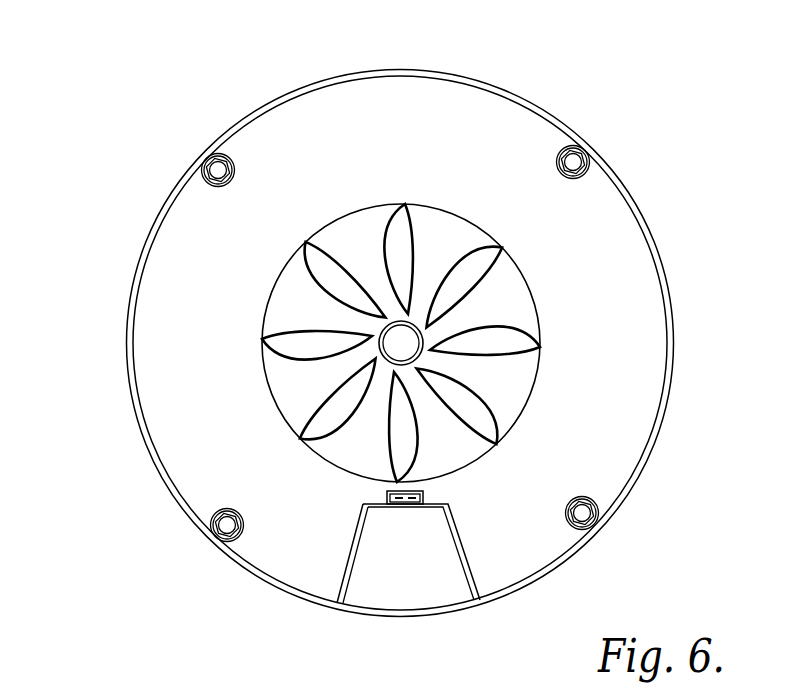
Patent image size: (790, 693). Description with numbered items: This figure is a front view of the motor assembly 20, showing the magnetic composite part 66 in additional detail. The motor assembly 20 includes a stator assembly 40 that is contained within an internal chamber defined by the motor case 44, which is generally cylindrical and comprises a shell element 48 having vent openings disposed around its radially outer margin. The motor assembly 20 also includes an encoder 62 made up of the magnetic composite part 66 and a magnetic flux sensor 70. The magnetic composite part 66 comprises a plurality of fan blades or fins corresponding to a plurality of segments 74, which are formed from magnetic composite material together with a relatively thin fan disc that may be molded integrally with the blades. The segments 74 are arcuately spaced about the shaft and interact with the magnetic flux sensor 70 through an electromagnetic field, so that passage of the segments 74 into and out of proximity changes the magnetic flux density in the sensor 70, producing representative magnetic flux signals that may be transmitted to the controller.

The motor assembly 20 is at (386, 310).
The stator assembly 40 is at (623, 300).
The motor case 44 is at (268, 100).
The shell element 48 is at (432, 72).
The encoder 62 is at (350, 490).
The magnetic composite part 66 is at (381, 293).
The magnetic flux sensor 70 is at (361, 534).
The segments 74 is at (398, 225).